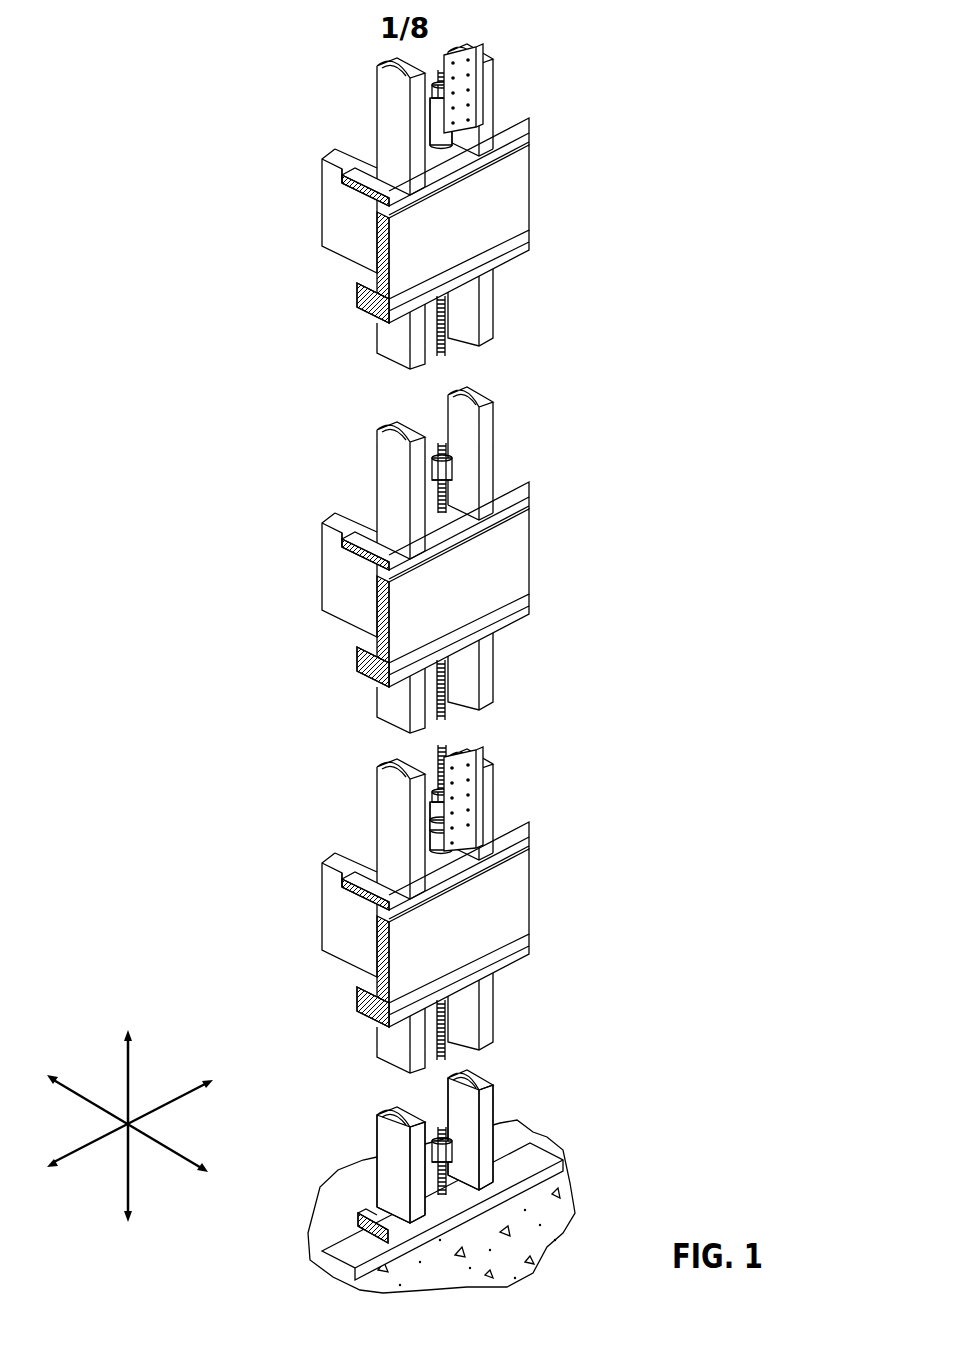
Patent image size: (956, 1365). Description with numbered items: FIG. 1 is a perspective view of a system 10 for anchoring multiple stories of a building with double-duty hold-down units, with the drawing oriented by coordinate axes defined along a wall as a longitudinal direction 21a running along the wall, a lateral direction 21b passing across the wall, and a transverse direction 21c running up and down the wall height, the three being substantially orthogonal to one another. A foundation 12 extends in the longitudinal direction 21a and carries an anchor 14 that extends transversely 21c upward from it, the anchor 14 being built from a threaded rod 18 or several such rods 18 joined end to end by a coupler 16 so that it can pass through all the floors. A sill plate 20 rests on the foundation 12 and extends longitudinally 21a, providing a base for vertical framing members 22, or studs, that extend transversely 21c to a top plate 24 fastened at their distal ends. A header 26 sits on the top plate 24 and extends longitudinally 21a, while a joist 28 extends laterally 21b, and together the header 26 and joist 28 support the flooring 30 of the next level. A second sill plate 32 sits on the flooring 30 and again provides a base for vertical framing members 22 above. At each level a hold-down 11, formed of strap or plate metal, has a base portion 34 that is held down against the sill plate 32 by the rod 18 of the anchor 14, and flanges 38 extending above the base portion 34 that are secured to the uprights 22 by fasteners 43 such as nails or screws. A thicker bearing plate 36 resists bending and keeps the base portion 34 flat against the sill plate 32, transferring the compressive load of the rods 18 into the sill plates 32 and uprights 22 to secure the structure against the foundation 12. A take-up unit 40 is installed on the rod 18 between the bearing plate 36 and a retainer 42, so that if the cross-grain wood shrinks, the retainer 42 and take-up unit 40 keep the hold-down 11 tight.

The system 10 is at (173, 112).
The hold-down 11 is at (474, 96).
The foundation 12 is at (555, 1217).
The anchor 14 is at (447, 740).
The coupler 16 is at (446, 466).
The threaded rod 18 is at (446, 670).
The sill plate 20 is at (508, 1168).
The longitudinal direction 21a is at (187, 1095).
The lateral direction 21b is at (173, 1157).
The transverse direction 21c is at (130, 1075).
The vertical framing member 22 is at (386, 442).
The top plate 24 is at (530, 618).
The header 26 is at (474, 592).
The joist 28 is at (366, 592).
The flooring 30 is at (372, 524).
The sill plate 32 is at (508, 481).
The base portion 34 is at (466, 524).
The bearing plate 36 is at (467, 519).
The flange 38 is at (448, 58).
The take-up unit 40 is at (437, 137).
The retainer 42 is at (444, 443).
The fastener 43 is at (478, 808).